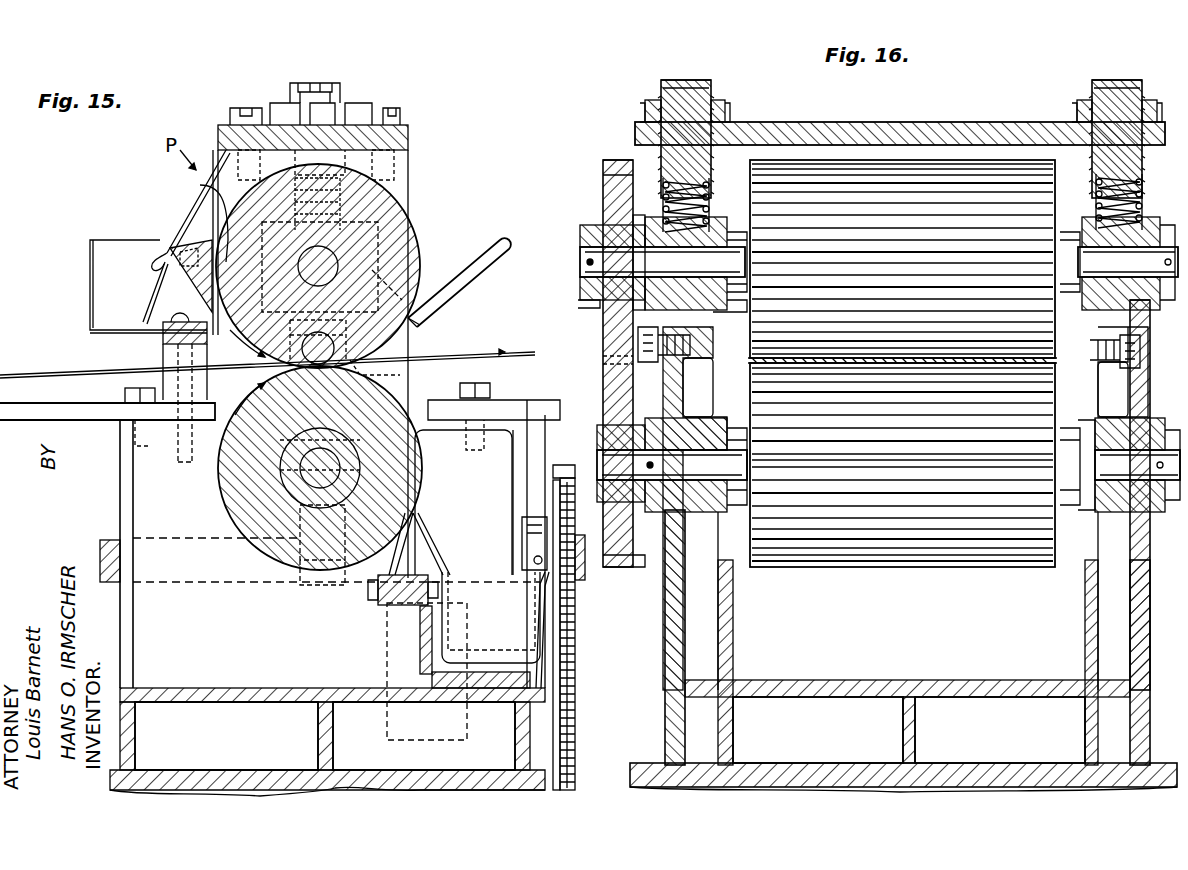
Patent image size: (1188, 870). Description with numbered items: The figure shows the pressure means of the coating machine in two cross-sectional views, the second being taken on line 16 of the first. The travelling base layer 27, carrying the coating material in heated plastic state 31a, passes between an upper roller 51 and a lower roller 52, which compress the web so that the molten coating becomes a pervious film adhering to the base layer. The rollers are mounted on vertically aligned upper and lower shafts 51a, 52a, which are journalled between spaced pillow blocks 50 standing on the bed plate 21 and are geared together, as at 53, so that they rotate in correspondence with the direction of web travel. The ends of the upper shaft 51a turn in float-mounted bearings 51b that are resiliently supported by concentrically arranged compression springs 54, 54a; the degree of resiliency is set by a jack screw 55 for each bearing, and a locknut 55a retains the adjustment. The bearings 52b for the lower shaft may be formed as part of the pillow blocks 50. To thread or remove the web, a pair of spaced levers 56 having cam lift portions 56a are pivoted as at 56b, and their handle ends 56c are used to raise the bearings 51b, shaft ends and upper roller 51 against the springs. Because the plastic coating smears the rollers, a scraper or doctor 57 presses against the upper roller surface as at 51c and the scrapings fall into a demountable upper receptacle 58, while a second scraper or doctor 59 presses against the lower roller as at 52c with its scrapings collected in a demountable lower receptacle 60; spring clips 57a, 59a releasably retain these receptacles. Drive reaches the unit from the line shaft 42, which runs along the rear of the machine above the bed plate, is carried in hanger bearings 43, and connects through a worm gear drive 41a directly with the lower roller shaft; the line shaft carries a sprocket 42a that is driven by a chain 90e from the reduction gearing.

In FIG. 15, the section line 16 is at (312, 80).
In FIG. 15, the bed plate 21 is at (212, 768).
In FIG. 16, the bed plate 21 is at (838, 762).
In FIG. 16, the travelling base layer 27 is at (865, 366).
In FIG. 15, the coating material in heated plastic state 31a is at (66, 372).
In FIG. 16, the coating material in heated plastic state 31a is at (893, 358).
In FIG. 15, the worm gear drive 41a is at (95, 412).
In FIG. 15, the line shaft 42 is at (232, 585).
In FIG. 15, the sprocket 42a is at (562, 478).
In FIG. 15, the hanger bearing 43 is at (387, 648).
In FIG. 15, the pillow block 50 is at (135, 490).
In FIG. 16, the pillow block 50 is at (672, 660).
In FIG. 15, the upper roller 51 is at (405, 195).
In FIG. 16, the upper roller 51 is at (902, 259).
In FIG. 16, the upper shaft 51a is at (879, 264).
In FIG. 15, the bearing 51b is at (416, 196).
In FIG. 16, the bearing 51b is at (578, 300).
In FIG. 15, the scraper contact point 51c is at (200, 185).
In FIG. 15, the lower roller 52 is at (385, 412).
In FIG. 16, the lower roller 52 is at (902, 465).
In FIG. 16, the lower shaft 52a is at (888, 465).
In FIG. 16, the bearing 52b is at (718, 515).
In FIG. 15, the scraper contact point 52c is at (420, 512).
In FIG. 16, the gearing 53 is at (608, 380).
In FIG. 16, the compression spring 54 is at (665, 182).
In FIG. 16, the compression spring 54a is at (708, 200).
In FIG. 15, the jack screw 55 is at (322, 82).
In FIG. 16, the jack screw 55 is at (688, 98).
In FIG. 15, the locknut 55a is at (354, 112).
In FIG. 16, the locknut 55a is at (730, 108).
In FIG. 15, the lever 56 is at (436, 258).
In FIG. 15, the cam lift portion 56a is at (416, 322).
In FIG. 16, the cam lift portion 56a is at (603, 330).
In FIG. 15, the lever pivot 56b is at (380, 373).
In FIG. 16, the lever pivot 56b is at (700, 380).
In FIG. 15, the handle end 56c is at (480, 245).
In FIG. 15, the scraper 57 is at (210, 265).
In FIG. 15, the spring clip 57a is at (175, 262).
In FIG. 15, the upper receptacle 58 is at (100, 272).
In FIG. 15, the scraper 59 is at (420, 520).
In FIG. 15, the spring clip 59a is at (548, 648).
In FIG. 15, the lower receptacle 60 is at (478, 630).
In FIG. 15, the chain 90e is at (568, 730).